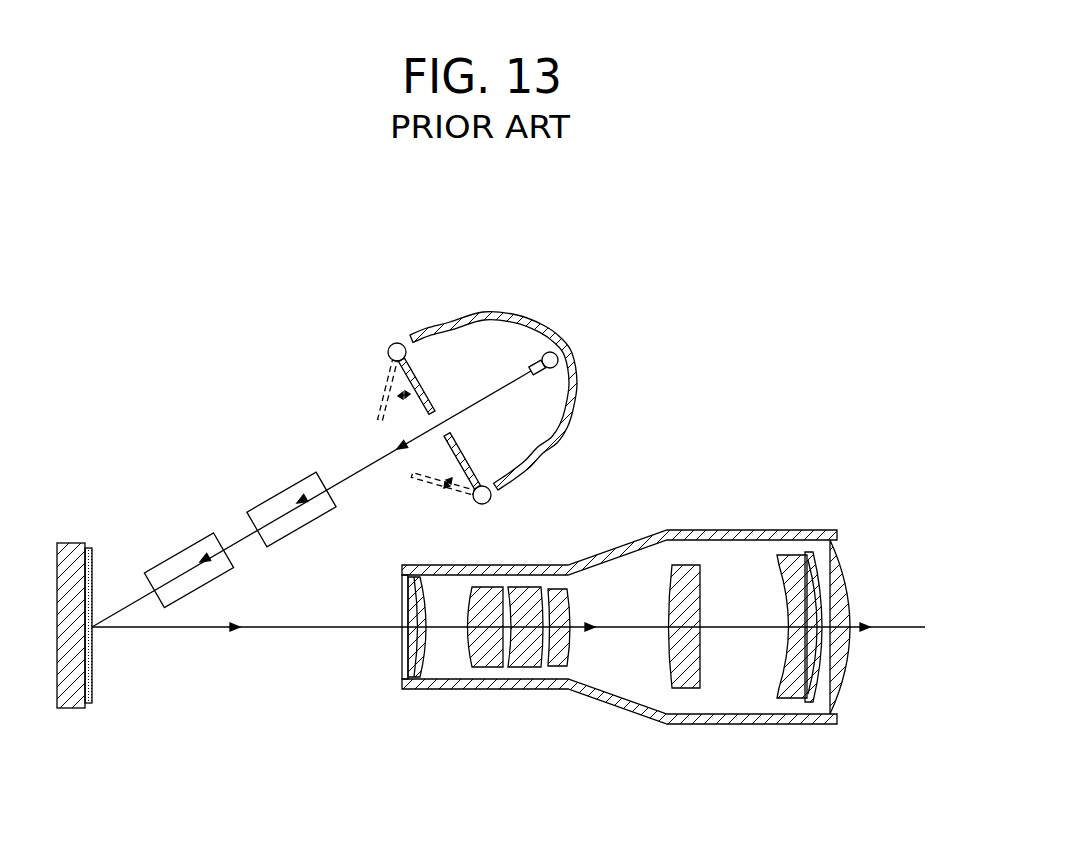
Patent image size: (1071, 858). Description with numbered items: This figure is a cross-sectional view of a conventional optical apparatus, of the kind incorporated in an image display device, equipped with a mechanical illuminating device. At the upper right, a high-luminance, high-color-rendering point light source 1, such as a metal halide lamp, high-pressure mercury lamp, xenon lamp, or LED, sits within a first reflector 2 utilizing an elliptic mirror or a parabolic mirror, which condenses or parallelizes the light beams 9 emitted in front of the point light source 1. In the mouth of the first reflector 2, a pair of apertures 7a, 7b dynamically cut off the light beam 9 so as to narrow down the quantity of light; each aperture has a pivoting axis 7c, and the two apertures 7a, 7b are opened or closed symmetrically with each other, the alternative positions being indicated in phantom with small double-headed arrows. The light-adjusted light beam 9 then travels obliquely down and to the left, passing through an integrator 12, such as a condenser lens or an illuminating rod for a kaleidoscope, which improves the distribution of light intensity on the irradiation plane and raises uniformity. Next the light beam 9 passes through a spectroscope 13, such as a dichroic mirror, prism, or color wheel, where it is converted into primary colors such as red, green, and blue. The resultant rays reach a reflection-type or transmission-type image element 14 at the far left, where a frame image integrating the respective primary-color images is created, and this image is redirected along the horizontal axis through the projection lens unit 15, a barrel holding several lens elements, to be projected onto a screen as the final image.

The point light source 1 is at (548, 352).
The first reflector 2 is at (573, 407).
The aperture 7a is at (380, 407).
The aperture 7b is at (427, 480).
The pivoting axis 7c is at (395, 343).
The light beam 9 is at (337, 478).
The integrator 12 is at (275, 508).
The spectroscope 13 is at (177, 567).
The image element 14 is at (77, 667).
The projection lens unit 15 is at (735, 717).